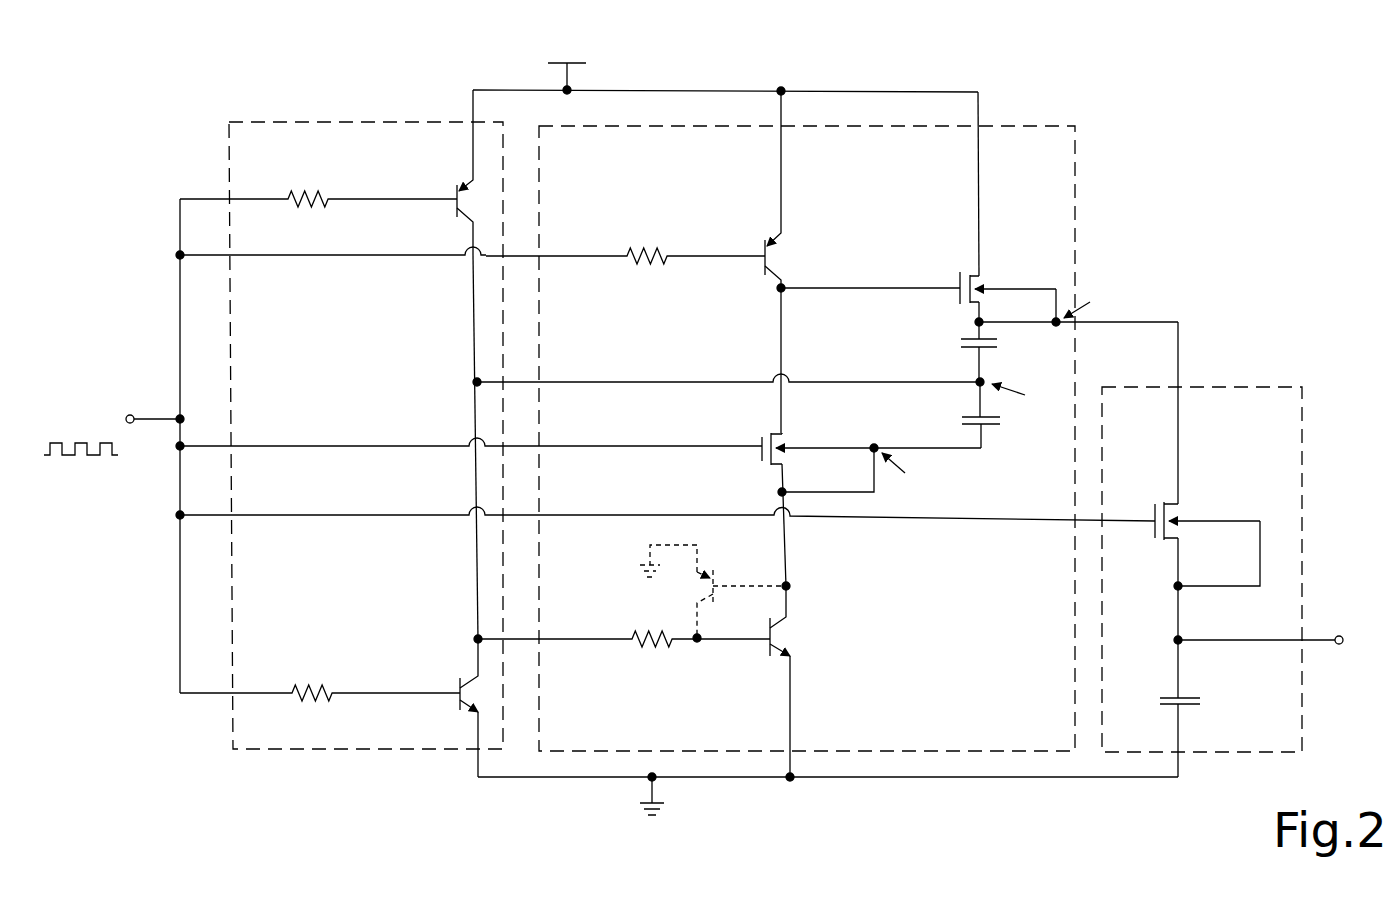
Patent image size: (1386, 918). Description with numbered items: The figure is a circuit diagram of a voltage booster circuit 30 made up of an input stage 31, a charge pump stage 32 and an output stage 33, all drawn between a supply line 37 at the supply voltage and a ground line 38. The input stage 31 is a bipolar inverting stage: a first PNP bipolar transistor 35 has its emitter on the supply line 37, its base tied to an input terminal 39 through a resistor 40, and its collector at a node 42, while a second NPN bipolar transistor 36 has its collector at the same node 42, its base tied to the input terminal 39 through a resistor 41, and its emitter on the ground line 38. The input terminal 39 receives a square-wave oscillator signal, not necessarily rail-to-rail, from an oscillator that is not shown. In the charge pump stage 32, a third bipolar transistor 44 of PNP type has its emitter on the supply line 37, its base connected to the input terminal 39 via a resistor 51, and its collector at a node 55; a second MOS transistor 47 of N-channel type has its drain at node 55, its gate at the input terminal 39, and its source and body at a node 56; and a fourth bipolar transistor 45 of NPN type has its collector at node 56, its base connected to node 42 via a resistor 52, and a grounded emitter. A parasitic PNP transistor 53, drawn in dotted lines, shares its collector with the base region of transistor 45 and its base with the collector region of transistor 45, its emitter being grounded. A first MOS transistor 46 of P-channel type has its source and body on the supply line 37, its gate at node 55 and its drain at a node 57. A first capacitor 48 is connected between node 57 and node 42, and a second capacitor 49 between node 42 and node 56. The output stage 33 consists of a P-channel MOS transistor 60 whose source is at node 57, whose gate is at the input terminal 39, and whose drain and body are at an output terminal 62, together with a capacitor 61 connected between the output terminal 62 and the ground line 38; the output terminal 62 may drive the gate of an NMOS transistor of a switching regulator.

The voltage booster circuit 30 is at (1207, 188).
The input stage 31 is at (310, 118).
The charge pump stage 32 is at (1080, 177).
The output stage 33 is at (1255, 393).
The first PNP bipolar transistor 35 is at (471, 222).
The second NPN bipolar transistor 36 is at (470, 693).
The supply line 37 is at (876, 91).
The ground line 38 is at (881, 778).
The input terminal 39 is at (127, 415).
The resistor 40 is at (315, 208).
The resistor 41 is at (312, 690).
The node 42 is at (475, 380).
The third bipolar transistor 44 is at (790, 250).
The fourth bipolar transistor 45 is at (797, 634).
The first MOS transistor 46 is at (985, 274).
The second MOS transistor 47 is at (781, 440).
The first capacitor 48 is at (1000, 346).
The second capacitor 49 is at (1000, 423).
The resistor 51 is at (655, 254).
The resistor 52 is at (640, 648).
The parasitic PNP transistor 53 is at (700, 588).
The node 55 is at (790, 292).
The node 56 is at (780, 492).
The node 57 is at (975, 323).
The P-channel MOS transistor 60 is at (1172, 508).
The capacitor 61 is at (1203, 702).
The output terminal 62 is at (1339, 636).